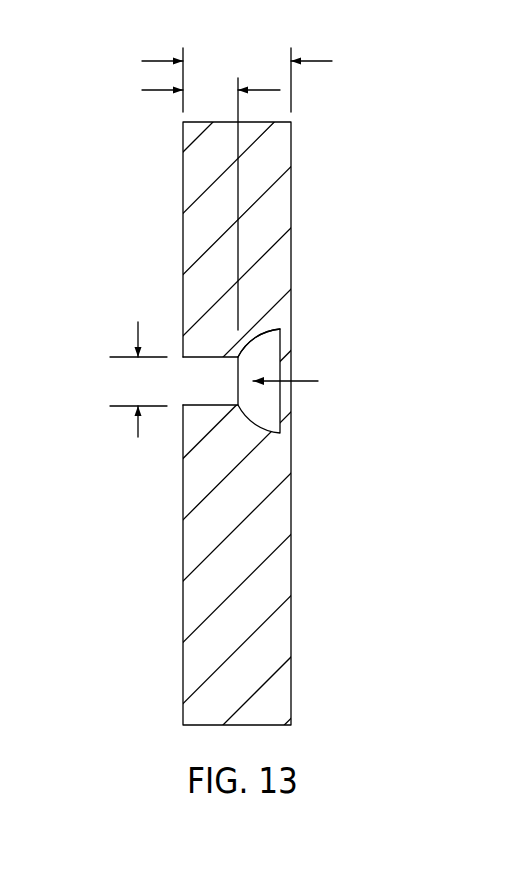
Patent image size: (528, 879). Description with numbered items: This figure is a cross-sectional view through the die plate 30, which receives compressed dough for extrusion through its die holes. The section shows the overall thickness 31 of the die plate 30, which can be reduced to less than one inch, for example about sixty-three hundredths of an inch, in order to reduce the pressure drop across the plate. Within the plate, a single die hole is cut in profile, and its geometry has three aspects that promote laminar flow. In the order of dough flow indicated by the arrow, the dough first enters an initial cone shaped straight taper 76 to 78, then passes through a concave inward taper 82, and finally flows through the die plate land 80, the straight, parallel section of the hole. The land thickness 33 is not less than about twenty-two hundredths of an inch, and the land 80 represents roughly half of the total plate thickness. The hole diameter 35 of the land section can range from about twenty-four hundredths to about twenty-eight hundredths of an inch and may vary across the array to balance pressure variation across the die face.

The die plate 30 is at (360, 197).
The thickness 31 is at (223, 80).
The land thickness 33 is at (196, 204).
The hole diameter 35 is at (138, 366).
The cone shaped straight taper 76 is at (280, 325).
The cone shaped straight taper end 78 is at (282, 434).
The die plate land 80 is at (203, 405).
The concave inward taper 82 is at (238, 357).